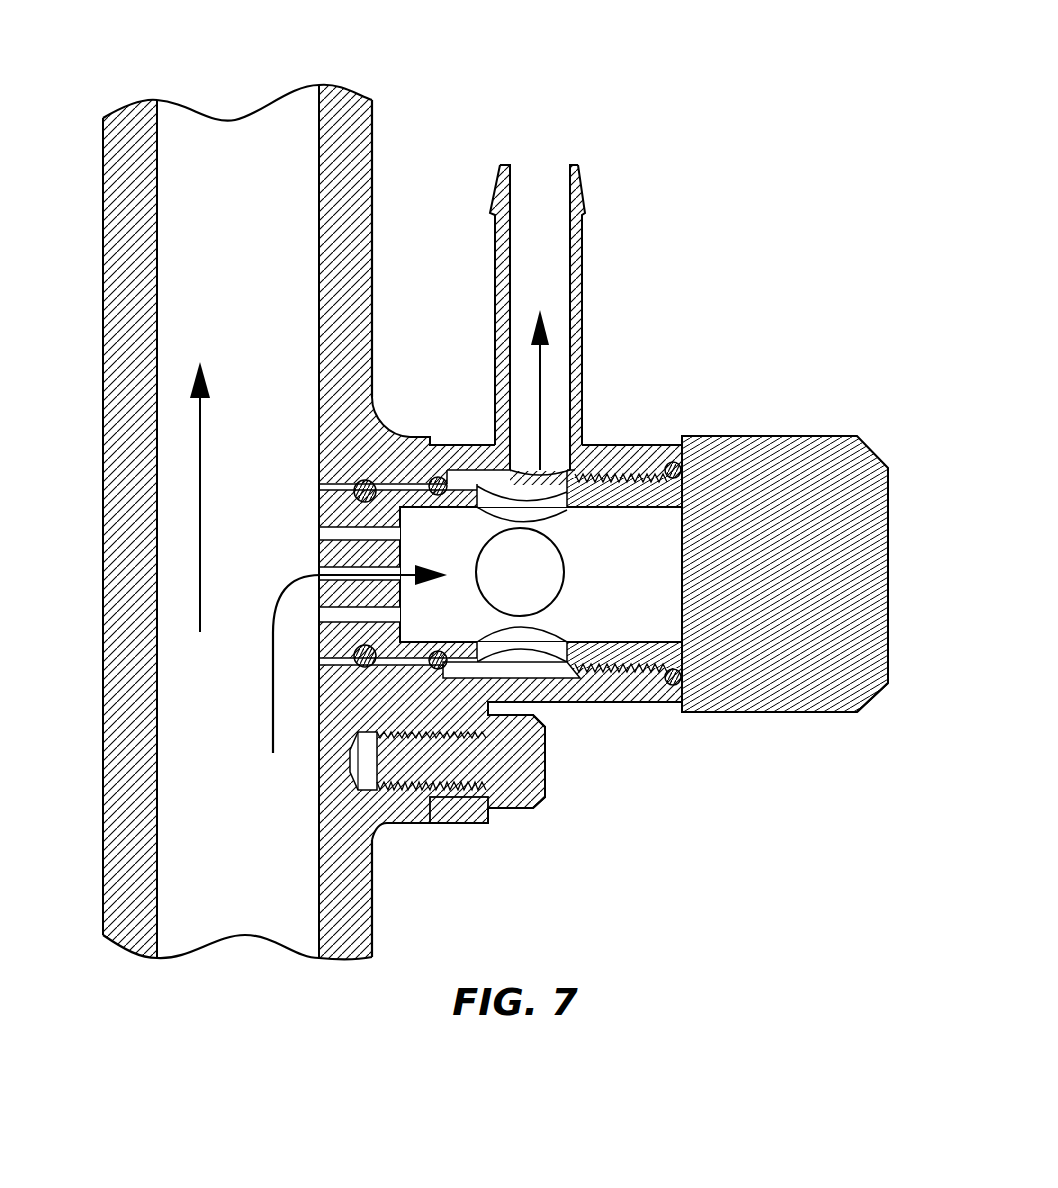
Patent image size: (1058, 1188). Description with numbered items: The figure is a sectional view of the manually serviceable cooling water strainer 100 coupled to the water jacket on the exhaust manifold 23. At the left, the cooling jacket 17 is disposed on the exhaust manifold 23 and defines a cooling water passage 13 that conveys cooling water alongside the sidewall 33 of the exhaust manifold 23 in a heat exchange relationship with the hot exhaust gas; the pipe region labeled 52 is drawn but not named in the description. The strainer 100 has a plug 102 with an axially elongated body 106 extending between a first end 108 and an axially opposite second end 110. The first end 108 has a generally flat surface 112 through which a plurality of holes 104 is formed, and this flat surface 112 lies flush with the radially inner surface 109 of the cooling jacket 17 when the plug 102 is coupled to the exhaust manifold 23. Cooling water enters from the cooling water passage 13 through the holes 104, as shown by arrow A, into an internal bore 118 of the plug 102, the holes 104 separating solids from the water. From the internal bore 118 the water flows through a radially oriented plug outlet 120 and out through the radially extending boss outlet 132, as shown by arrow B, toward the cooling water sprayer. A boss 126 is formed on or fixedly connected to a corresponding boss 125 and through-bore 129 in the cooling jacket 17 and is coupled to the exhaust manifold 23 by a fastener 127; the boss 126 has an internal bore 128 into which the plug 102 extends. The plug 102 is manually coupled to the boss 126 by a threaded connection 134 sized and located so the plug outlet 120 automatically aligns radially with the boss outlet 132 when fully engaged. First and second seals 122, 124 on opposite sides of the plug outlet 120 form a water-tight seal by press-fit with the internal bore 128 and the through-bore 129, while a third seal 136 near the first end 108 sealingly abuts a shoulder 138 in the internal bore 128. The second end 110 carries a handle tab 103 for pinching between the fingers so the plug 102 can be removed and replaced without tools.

The manually serviceable cooling water strainer 100 is at (846, 254).
The plug 102 is at (702, 436).
The handle tab 103 is at (860, 684).
The plurality of holes 104 is at (328, 537).
The axially elongated body 106 is at (604, 660).
The first end 108 is at (316, 482).
The radially inner surface 109 is at (316, 106).
The second end 110 is at (902, 466).
The generally flat surface 112 is at (317, 642).
The internal bore 118 is at (620, 615).
The plug outlet 120 is at (570, 497).
The first seal 122 is at (674, 462).
The second seal 124 is at (367, 484).
The boss 125 is at (353, 812).
The boss 126 is at (468, 708).
The fastener 127 is at (532, 789).
The internal bore 128 is at (532, 716).
The through-bore 129 is at (331, 484).
The boss outlet 132 is at (585, 297).
The threaded connection 134 is at (648, 680).
The third seal 136 is at (438, 480).
The shoulder 138 is at (440, 672).
The cooling water passage 13 is at (214, 201).
The cooling jacket 17 is at (376, 96).
The exhaust manifold 23 is at (103, 162).
The sidewall 33 is at (162, 104).
The pipe 52 is at (100, 579).
The arrow A is at (273, 690).
The arrow B is at (540, 382).